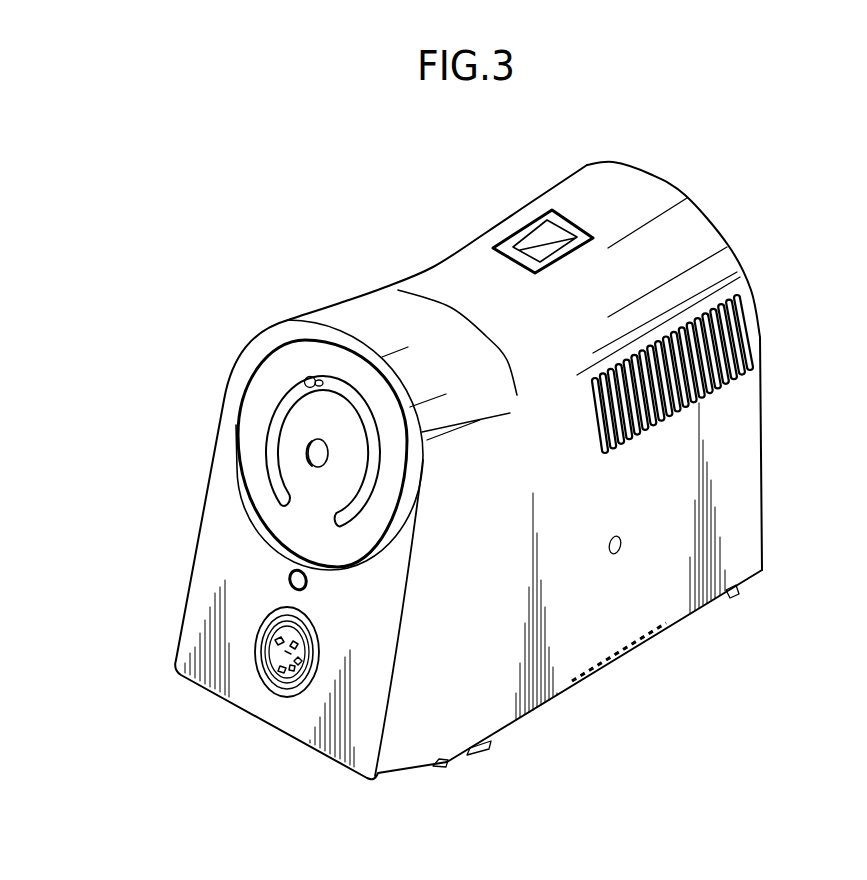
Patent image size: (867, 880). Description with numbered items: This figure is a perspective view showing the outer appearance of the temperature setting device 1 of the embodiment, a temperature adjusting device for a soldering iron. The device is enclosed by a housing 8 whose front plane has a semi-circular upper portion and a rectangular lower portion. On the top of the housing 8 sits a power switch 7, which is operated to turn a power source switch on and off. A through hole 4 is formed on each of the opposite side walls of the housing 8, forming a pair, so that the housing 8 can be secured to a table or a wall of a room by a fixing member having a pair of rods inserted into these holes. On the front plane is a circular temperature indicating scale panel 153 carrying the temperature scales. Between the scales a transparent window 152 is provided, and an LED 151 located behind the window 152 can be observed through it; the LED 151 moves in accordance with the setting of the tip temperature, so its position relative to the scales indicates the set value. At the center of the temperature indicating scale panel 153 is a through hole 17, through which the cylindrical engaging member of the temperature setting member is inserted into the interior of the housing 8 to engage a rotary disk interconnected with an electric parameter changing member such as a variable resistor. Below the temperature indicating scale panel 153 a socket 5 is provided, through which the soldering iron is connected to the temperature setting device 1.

The temperature setting device 1 is at (769, 199).
The through hole 4 is at (623, 543).
The socket 5 is at (257, 642).
The power switch 7 is at (543, 230).
The housing 8 is at (733, 450).
The through hole 17 is at (328, 452).
The LED 151 is at (307, 379).
The transparent window 152 is at (270, 430).
The temperature indicating scale panel 153 is at (257, 483).